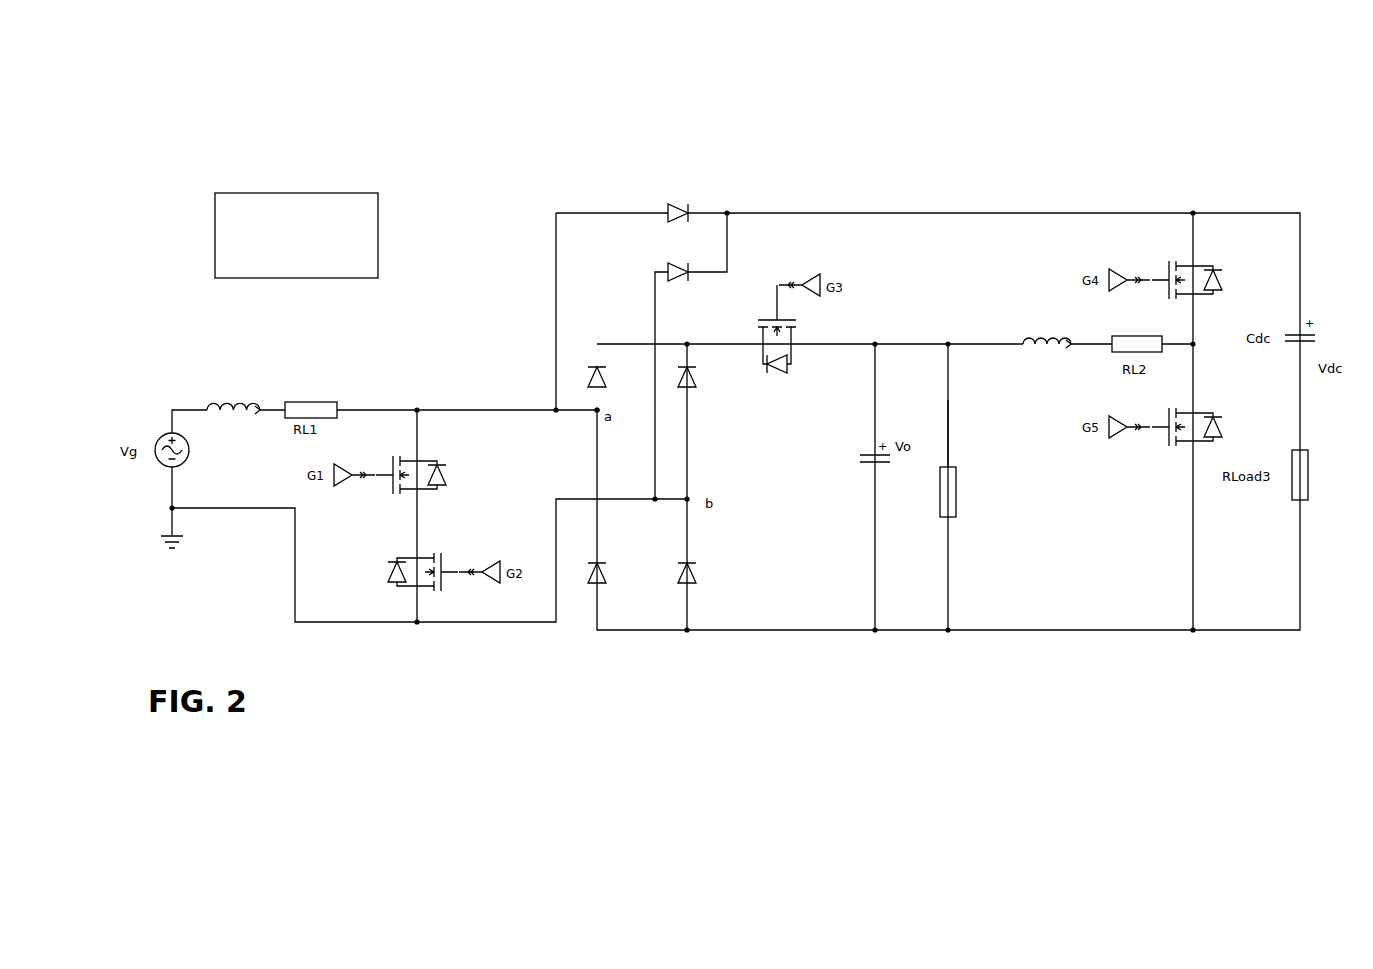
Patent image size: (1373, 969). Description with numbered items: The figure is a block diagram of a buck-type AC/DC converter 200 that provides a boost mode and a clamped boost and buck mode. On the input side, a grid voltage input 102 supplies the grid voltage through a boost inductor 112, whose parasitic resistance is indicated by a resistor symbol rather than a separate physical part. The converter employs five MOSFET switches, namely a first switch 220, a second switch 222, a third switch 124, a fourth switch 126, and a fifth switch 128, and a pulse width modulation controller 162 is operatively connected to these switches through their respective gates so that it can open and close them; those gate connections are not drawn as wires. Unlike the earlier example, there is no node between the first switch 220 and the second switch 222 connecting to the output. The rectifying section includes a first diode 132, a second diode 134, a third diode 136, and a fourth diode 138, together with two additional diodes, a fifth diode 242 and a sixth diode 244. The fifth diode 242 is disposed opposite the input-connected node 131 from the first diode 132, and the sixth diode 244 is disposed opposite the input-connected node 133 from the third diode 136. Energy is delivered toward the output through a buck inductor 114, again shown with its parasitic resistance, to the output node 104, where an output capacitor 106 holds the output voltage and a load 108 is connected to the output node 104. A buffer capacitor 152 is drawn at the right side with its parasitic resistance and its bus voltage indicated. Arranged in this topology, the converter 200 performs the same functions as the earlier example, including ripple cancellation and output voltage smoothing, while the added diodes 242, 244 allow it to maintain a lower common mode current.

The buck-type AC/DC converter 200 is at (182, 71).
The pulse width modulation controller 162 is at (296, 235).
The boost inductor 112 is at (206, 365).
The grid voltage input 102 is at (226, 457).
The MOSFET switch 220 is at (474, 459).
The MOSFET switch 222 is at (456, 553).
The input-connected node 131 is at (562, 449).
The diode 132 is at (558, 357).
The diode 134 is at (649, 194).
The diode 138 is at (631, 265).
The diode 136 is at (716, 421).
The input-connected node 133 is at (748, 479).
The MOSFET switch 124 is at (850, 343).
The buck inductor 114 is at (1020, 301).
The output node 104 is at (1004, 433).
The output capacitor 106 is at (848, 506).
The load 108 is at (976, 496).
The MOSFET switch 126 is at (1141, 262).
The MOSFET switch 128 is at (1181, 470).
The buffer capacitor 152 is at (1288, 285).
The diode 242 is at (587, 636).
The diode 244 is at (758, 586).